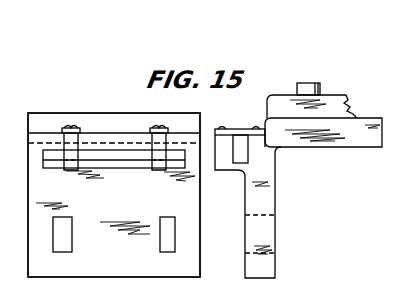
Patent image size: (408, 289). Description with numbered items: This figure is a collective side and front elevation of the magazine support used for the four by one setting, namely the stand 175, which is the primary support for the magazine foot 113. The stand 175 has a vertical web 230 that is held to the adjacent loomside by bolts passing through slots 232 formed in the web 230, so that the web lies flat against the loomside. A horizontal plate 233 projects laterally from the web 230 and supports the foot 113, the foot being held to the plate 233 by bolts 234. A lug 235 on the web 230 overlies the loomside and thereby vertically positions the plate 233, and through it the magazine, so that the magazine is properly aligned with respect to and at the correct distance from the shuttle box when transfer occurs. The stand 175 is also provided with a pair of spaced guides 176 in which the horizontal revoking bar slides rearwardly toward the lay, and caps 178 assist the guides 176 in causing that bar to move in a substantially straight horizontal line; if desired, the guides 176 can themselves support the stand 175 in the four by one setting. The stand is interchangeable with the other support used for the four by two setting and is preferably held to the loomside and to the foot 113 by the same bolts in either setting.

The magazine foot 113 is at (337, 100).
The stand 175 is at (201, 203).
The spaced guides 176 is at (75, 146).
The caps 178 is at (227, 128).
The vertical web 230 is at (271, 270).
The slots 232 is at (160, 245).
The horizontal plate 233 is at (373, 145).
The bolts 234 is at (312, 83).
The lug 235 is at (173, 170).